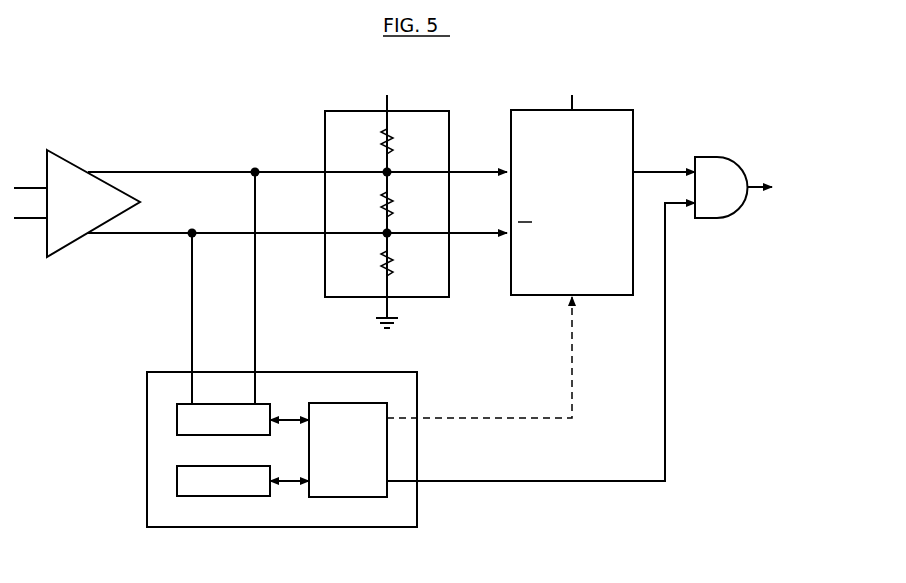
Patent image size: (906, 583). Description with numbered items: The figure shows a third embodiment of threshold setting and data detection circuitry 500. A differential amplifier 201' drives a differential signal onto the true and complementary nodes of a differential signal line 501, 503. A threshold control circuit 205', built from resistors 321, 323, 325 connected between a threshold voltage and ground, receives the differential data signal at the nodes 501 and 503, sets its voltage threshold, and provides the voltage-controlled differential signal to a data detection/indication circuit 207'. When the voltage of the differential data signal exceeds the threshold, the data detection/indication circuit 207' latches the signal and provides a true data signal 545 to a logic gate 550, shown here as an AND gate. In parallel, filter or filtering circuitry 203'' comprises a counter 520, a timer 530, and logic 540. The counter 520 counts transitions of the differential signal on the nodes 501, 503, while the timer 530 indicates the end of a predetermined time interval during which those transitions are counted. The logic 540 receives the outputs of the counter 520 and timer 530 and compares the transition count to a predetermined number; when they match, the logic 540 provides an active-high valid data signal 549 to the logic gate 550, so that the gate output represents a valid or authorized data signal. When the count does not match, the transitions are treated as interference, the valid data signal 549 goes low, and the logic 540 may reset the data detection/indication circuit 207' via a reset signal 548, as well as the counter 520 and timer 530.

The threshold setting and data detection circuitry 500 is at (664, 70).
The differential amplifier 201' is at (77, 184).
The true node of differential signal line 501 is at (256, 168).
The complementary node of differential signal line 503 is at (194, 228).
The threshold control circuit 205' is at (364, 201).
The resistor 321 is at (410, 150).
The resistor 323 is at (410, 212).
The resistor 325 is at (410, 272).
The data detection/indication circuit 207' is at (576, 210).
The true data signal 545 is at (660, 166).
The logic gate 550 is at (740, 218).
The valid data indication/signal 549 is at (666, 437).
The reset signal 548 is at (574, 386).
The filter or filtering circuitry 203'' is at (295, 449).
The counter 520 is at (176, 420).
The timer 530 is at (176, 481).
The logic 540 is at (388, 447).